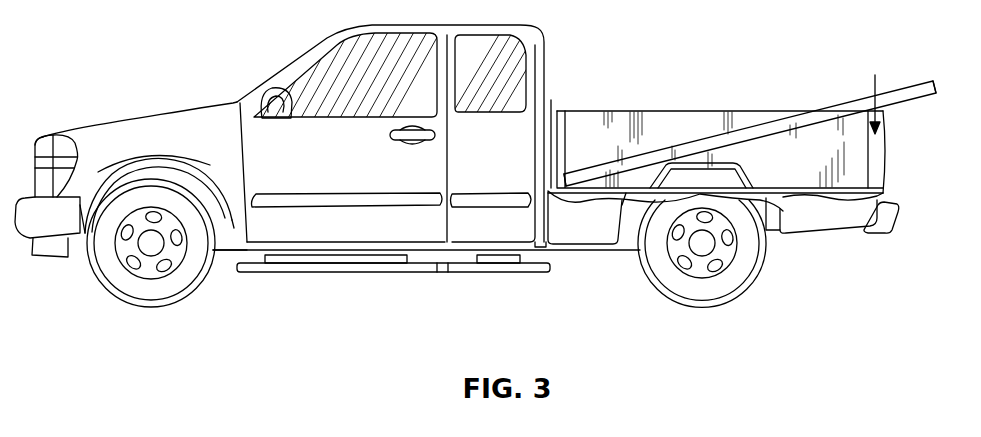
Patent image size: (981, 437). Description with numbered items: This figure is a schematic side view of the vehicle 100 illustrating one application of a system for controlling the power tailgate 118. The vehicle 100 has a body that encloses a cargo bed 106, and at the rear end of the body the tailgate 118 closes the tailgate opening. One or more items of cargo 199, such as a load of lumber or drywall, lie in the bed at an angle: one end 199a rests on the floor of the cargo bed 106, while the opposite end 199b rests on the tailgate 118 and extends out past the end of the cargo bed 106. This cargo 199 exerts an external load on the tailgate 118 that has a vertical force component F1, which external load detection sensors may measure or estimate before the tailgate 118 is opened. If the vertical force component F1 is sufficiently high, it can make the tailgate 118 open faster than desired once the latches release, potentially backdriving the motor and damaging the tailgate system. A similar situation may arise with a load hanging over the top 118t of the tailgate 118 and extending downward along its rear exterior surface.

The vehicle 100 is at (475, 160).
The cargo bed 106 is at (785, 200).
The tailgate 118 is at (877, 163).
The top of the tailgate 118t is at (883, 112).
The cargo 199 is at (749, 100).
The one end of cargo 199a is at (583, 176).
The opposite end of cargo 199b is at (920, 88).
The vertical force component F1 is at (875, 96).